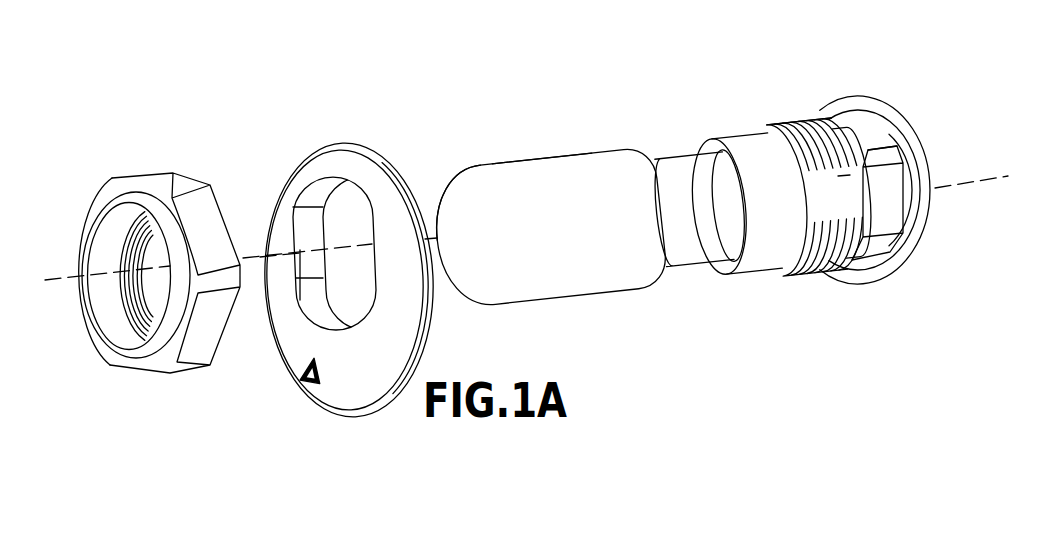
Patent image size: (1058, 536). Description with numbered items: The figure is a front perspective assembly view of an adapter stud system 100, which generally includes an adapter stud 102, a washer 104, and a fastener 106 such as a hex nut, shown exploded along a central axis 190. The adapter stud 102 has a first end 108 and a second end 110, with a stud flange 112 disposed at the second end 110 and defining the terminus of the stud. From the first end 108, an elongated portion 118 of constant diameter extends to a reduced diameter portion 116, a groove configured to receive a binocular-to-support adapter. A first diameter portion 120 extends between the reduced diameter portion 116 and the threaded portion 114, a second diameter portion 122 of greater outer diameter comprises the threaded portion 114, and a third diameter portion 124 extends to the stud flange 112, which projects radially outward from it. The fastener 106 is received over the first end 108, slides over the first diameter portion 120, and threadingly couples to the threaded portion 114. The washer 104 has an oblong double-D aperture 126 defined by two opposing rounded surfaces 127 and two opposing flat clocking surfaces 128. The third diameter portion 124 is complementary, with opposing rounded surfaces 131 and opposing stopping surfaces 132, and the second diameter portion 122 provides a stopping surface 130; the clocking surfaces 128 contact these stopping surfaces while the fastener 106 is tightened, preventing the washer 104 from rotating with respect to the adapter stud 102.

The adapter stud system 100 is at (126, 101).
The fastener 106 is at (161, 175).
The washer 104 is at (332, 144).
The aperture 126 is at (302, 180).
The rounded surfaces 127 is at (320, 183).
The clocking surfaces 128 is at (373, 280).
The central axis 190 is at (283, 255).
The adapter stud 102 is at (606, 150).
The first end 108 is at (453, 172).
The elongated portion 118 is at (541, 153).
The reduced diameter portion 116 is at (663, 152).
The first diameter portion 120 is at (697, 287).
The second diameter portion 122 is at (833, 287).
The third diameter portion 124 is at (880, 287).
The threaded portion 114 is at (780, 123).
The stud flange 112 is at (906, 270).
The second end 110 is at (843, 93).
The rounded surfaces 131 is at (877, 140).
The stopping surfaces 132 is at (893, 187).
The stopping surface 130 is at (840, 202).